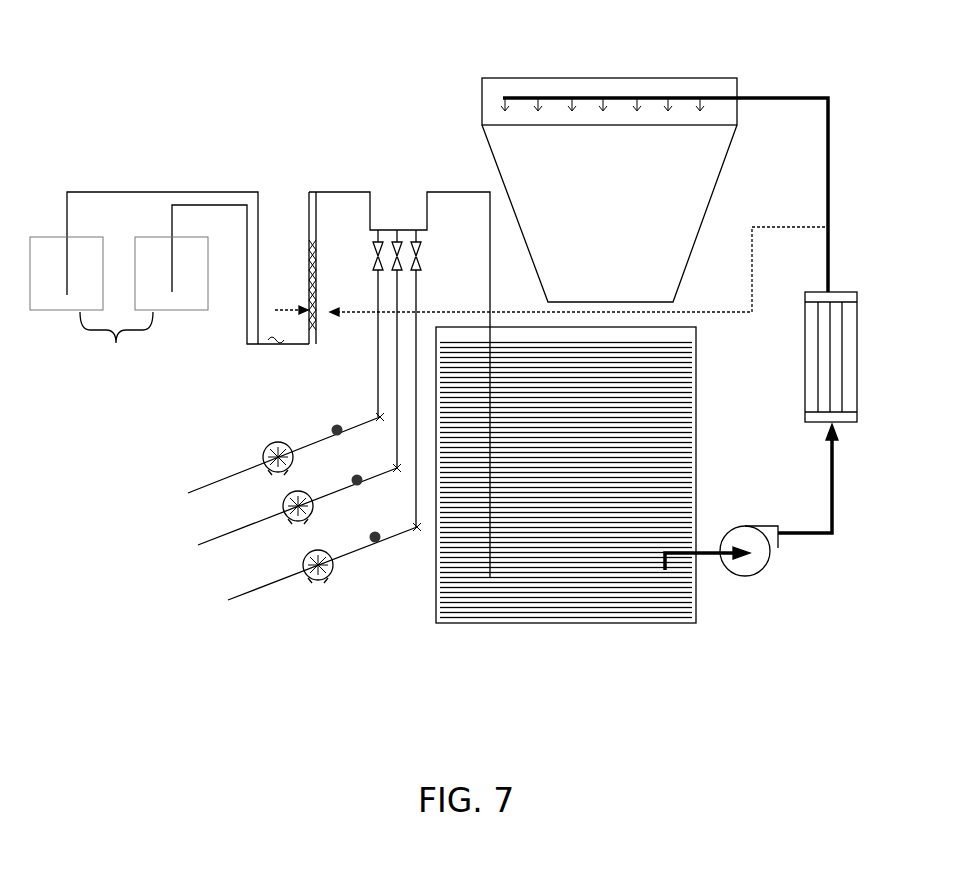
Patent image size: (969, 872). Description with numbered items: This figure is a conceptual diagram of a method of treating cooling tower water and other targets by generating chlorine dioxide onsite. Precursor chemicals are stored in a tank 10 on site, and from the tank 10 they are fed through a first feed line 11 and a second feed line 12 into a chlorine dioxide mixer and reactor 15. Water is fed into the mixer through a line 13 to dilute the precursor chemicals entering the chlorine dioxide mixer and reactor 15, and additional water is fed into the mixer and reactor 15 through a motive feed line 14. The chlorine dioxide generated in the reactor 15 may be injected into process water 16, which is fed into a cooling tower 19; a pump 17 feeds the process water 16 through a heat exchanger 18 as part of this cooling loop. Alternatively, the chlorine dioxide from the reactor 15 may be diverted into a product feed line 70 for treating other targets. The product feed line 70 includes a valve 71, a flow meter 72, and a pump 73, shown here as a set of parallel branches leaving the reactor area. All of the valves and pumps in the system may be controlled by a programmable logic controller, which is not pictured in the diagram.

The tank 10 is at (119, 302).
The first feed line 11 is at (130, 190).
The second feed line 12 is at (222, 204).
The line 13 is at (288, 306).
The motive feed line 14 is at (795, 223).
The chlorine dioxide mixer and reactor 15 is at (307, 247).
The process water 16 is at (453, 597).
The pump 17 is at (768, 557).
The heat exchanger 18 is at (857, 417).
The cooling tower 19 is at (670, 77).
The product feed line 70 is at (225, 477).
The valve 71 is at (422, 250).
The flow meter 72 is at (332, 423).
The pump 73 is at (272, 443).